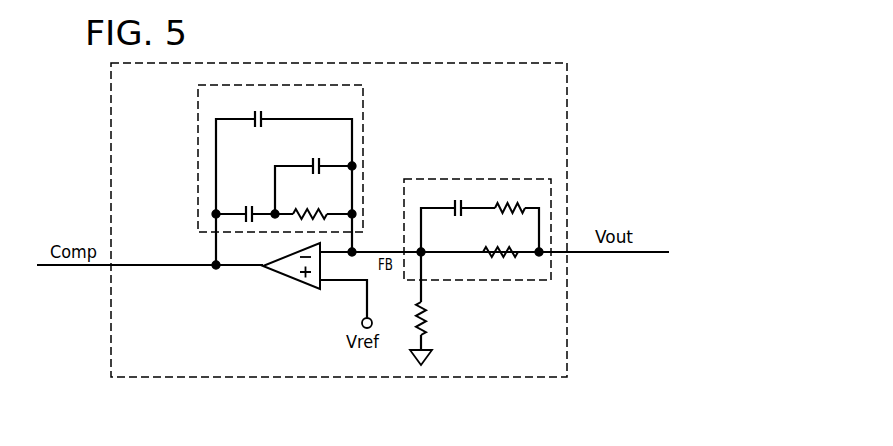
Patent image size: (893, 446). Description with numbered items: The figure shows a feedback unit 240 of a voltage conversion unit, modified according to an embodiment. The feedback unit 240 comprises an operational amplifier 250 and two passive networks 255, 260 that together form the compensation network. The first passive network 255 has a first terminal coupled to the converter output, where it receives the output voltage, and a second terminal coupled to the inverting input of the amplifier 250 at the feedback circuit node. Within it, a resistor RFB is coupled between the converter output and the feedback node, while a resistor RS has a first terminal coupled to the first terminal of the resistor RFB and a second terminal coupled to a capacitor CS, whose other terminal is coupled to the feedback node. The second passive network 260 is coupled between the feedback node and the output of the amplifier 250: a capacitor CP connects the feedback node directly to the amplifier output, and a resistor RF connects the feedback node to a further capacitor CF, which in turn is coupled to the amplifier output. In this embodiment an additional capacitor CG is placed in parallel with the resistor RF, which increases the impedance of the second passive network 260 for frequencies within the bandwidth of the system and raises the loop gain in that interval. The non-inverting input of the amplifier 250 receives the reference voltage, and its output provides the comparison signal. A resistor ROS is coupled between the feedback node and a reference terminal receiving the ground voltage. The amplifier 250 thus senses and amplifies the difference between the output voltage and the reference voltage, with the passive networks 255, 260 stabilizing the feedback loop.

The feedback unit 240 is at (111, 300).
The operational amplifier 250 is at (283, 277).
The first passive network 255 is at (477, 249).
The second passive network 260 is at (316, 175).
The capacitor CP is at (258, 107).
The additional capacitor CG is at (316, 154).
The further capacitor CF is at (249, 202).
The resistor RF is at (310, 200).
The capacitor CS is at (445, 200).
The resistor RS is at (510, 198).
The resistor RFB is at (500, 241).
The resistor ROS is at (436, 308).